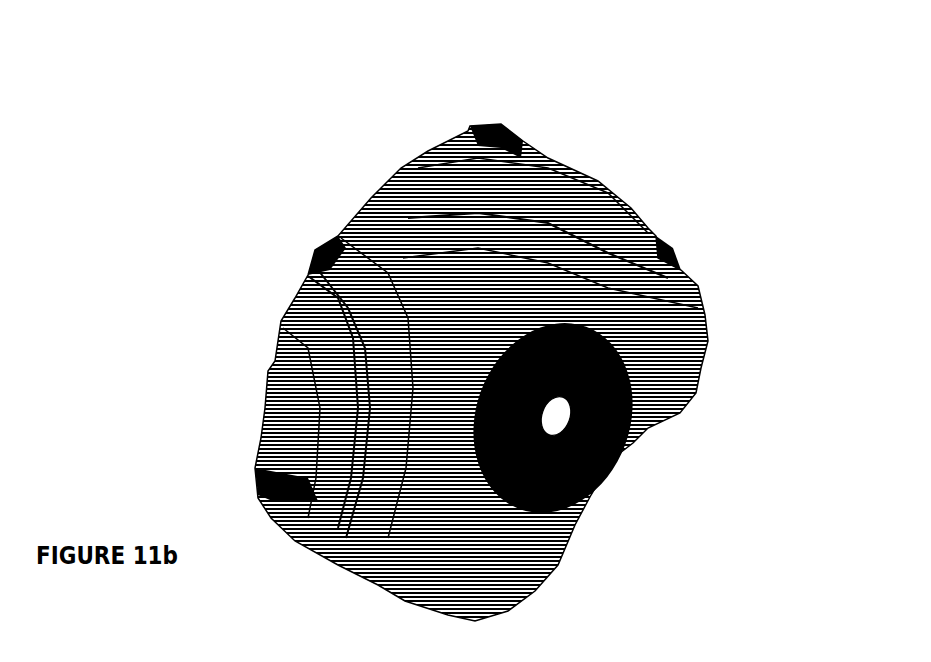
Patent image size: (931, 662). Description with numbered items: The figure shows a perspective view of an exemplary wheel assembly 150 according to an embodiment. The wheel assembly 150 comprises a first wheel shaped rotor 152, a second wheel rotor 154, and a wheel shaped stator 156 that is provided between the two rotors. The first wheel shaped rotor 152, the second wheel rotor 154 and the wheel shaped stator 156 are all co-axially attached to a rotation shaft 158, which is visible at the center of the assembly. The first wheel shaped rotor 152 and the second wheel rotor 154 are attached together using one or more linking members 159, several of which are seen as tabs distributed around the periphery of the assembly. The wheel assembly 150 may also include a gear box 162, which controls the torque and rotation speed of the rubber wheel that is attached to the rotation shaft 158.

The wheel assembly 150 is at (233, 253).
The first wheel shaped rotor 152 is at (363, 187).
The second wheel rotor 154 is at (367, 250).
The wheel shaped stator 156 is at (413, 193).
The rotation shaft 158 is at (597, 467).
The linking members 159 is at (155, 0).
The gear box 162 is at (623, 437).